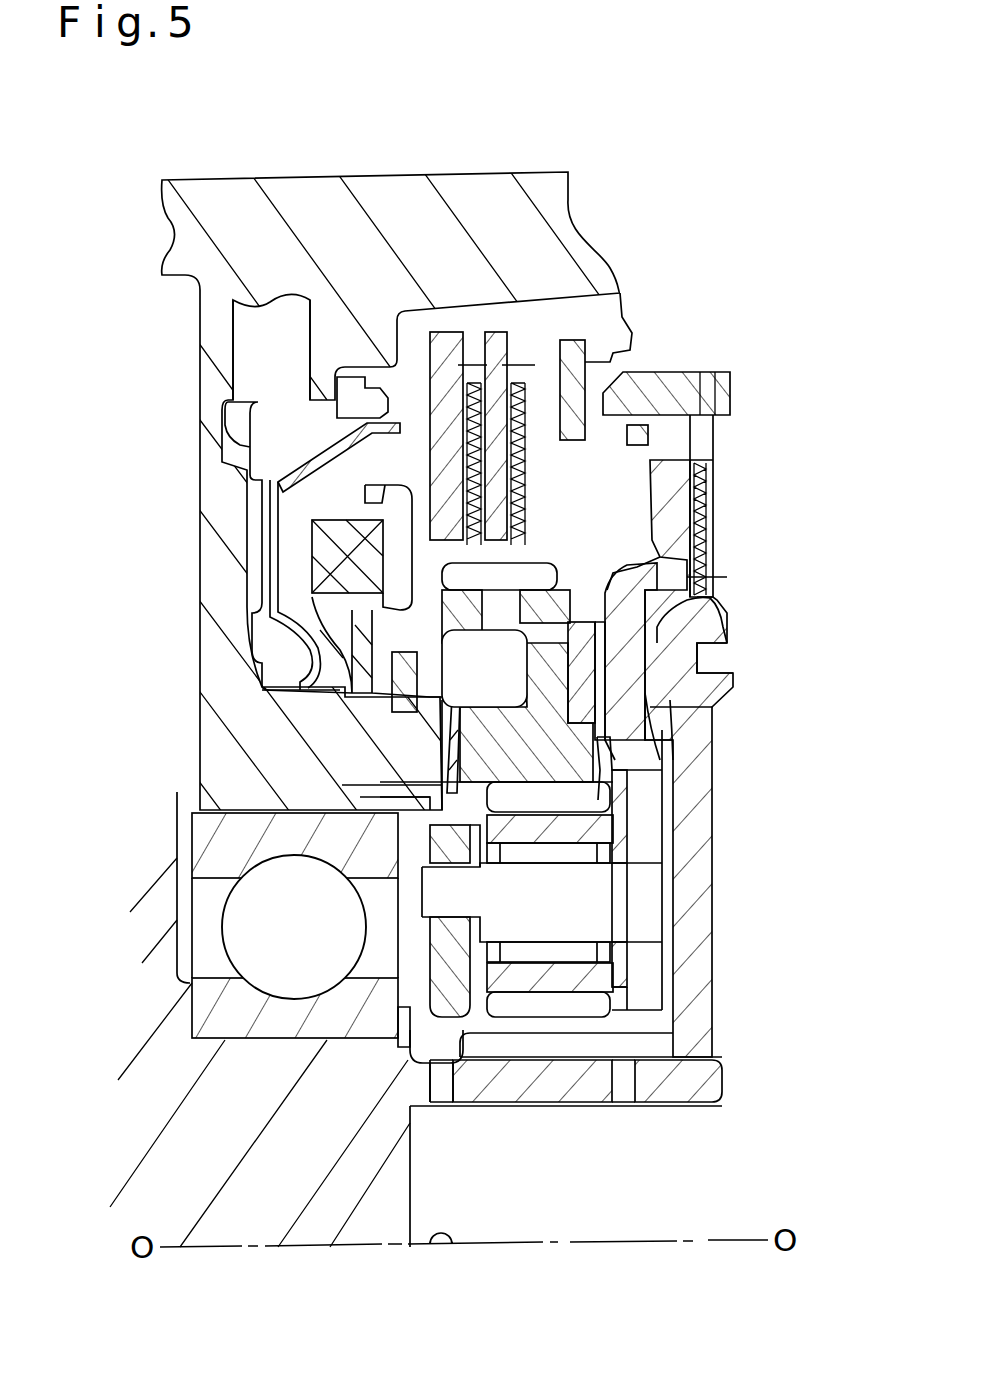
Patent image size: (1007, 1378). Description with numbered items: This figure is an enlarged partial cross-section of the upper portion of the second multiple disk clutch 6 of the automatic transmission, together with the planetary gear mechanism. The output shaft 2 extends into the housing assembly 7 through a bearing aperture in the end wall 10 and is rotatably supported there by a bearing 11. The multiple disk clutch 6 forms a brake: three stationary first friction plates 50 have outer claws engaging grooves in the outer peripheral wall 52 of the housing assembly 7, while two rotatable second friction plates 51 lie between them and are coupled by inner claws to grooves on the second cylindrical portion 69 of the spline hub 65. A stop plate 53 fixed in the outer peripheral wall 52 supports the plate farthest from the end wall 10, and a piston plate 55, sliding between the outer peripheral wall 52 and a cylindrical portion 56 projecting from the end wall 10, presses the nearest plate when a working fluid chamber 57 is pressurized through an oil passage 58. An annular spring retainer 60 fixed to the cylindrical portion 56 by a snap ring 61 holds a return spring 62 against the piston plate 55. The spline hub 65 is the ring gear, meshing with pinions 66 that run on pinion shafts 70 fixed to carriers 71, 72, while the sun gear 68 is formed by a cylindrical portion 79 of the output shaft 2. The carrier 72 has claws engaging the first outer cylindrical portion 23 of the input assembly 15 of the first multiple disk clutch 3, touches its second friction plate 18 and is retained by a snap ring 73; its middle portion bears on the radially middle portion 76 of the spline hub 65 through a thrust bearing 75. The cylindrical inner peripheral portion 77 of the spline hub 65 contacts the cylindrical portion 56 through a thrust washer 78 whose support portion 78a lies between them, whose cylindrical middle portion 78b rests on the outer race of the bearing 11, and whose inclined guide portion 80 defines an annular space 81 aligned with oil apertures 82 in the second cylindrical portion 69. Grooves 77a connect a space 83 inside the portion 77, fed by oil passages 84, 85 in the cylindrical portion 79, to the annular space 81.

The output shaft 2 is at (420, 1132).
The first multiple disk clutch 3 is at (713, 703).
The multiple disk clutch 6 is at (590, 368).
The housing assembly 7 is at (337, 487).
The end wall 10 is at (337, 487).
The bearing 11 is at (247, 953).
The input member or assembly 15 is at (698, 362).
The second friction plates 18 is at (700, 470).
The first outer cylindrical portion 23 is at (665, 385).
The first friction plates 50 is at (540, 337).
The second friction plates 51 is at (513, 487).
The outer peripheral wall 52 is at (505, 225).
The stop plate 53 is at (577, 343).
The pressure or piston plate 55 is at (248, 478).
The cylindrical portion 56 is at (300, 704).
The working fluid chamber 57 is at (278, 445).
The oil passage 58 is at (247, 358).
The annular spring retainer 60 is at (343, 550).
The snap ring 61 is at (425, 737).
The return spring 62 is at (360, 578).
The spline hub 65 is at (637, 733).
The pinions 66 is at (593, 830).
The sun gear 68 is at (557, 1050).
The second cylindrical portion 69 is at (330, 622).
The pinion shafts 70 is at (630, 920).
The carrier 71 is at (440, 963).
The carrier 72 is at (680, 830).
The snap ring 73 is at (637, 433).
The thrust bearing 75 is at (667, 685).
The radially middle portion 76 is at (583, 690).
The cylindrical inner peripheral portion 77 is at (580, 753).
The grooves 77a is at (623, 767).
The thrust washer 78 is at (447, 760).
The support portion 78a is at (360, 790).
The cylindrical middle portion 78b is at (380, 800).
The cylindrical portion 79 is at (677, 1083).
The guide portion 80 is at (565, 613).
The annular space 81 is at (607, 657).
The oil apertures 82 is at (653, 593).
The space 83 is at (407, 833).
The oil passage 84 is at (445, 1095).
The oil passage 85 is at (628, 1105).